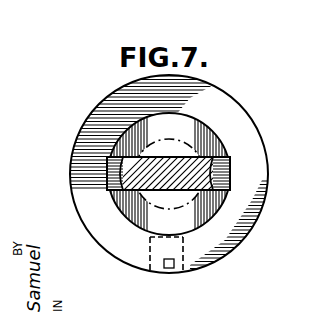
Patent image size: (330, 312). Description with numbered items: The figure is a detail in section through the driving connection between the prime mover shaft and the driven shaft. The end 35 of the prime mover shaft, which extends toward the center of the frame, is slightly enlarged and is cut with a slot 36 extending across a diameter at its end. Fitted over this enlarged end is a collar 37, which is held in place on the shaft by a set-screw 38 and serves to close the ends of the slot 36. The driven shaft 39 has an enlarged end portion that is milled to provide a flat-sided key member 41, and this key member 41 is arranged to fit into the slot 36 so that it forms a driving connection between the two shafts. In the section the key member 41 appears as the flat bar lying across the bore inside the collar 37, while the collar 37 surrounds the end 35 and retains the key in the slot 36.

The end of the shaft 35 is at (225, 143).
The slot 36 is at (231, 170).
The collar 37 is at (256, 192).
The set-screw 38 is at (150, 238).
The shaft 39 is at (171, 207).
The key member 41 is at (137, 175).